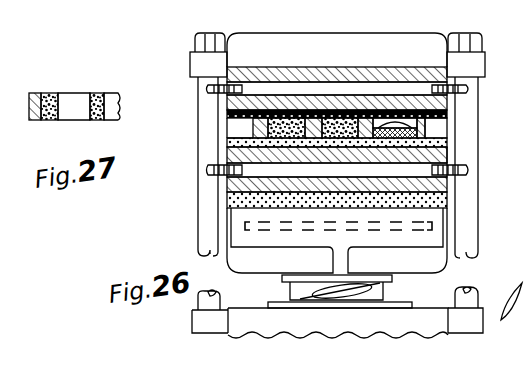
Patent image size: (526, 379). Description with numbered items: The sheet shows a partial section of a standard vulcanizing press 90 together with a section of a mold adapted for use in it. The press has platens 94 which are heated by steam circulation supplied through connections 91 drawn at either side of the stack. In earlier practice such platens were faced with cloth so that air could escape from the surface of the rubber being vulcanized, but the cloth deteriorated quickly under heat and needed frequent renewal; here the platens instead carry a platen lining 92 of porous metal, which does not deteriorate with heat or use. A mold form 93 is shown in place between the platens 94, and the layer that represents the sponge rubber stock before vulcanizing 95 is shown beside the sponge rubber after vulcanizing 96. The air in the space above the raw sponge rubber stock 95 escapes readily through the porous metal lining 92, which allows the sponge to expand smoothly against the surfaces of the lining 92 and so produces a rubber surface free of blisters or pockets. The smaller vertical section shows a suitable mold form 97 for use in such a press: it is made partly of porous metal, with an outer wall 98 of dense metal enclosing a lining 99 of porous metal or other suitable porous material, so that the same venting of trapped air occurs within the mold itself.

In FIG. 26, the vulcanizing press 90 is at (447, 35).
In FIG. 26, the connections 91 is at (210, 90).
In FIG. 26, the platen lining 92 is at (432, 121).
In FIG. 26, the mold form 93 is at (253, 124).
In FIG. 26, the platens 94 is at (320, 88).
In FIG. 26, the sponge rubber stock before vulcanizing 95 is at (447, 152).
In FIG. 26, the sponge rubber after vulcanizing 96 is at (250, 138).
In FIG. 27, the mold form 97 is at (33, 93).
In FIG. 27, the outer wall 98 is at (33, 120).
In FIG. 27, the lining of porous metal 99 is at (91, 97).